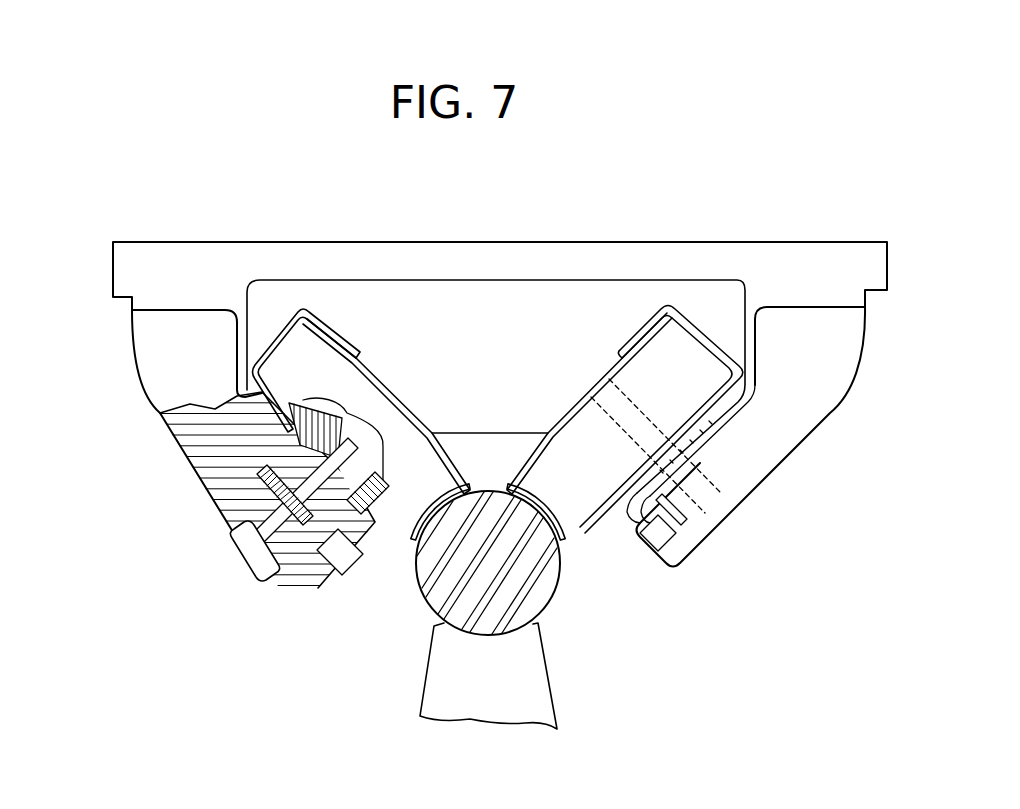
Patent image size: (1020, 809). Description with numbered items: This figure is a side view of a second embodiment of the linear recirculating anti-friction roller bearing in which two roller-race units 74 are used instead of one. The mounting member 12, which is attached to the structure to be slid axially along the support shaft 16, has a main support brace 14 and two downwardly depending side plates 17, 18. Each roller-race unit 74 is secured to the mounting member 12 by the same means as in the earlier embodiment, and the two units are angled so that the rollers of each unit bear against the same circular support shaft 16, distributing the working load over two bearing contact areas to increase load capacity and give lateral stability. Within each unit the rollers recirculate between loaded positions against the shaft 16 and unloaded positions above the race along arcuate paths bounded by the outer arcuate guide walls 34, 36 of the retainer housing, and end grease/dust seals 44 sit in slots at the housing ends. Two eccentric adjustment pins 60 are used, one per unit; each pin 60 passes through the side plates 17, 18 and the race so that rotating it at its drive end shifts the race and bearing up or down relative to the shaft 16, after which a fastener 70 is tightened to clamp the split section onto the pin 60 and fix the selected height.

The mounting member 12 is at (348, 250).
The main support brace 14 is at (523, 271).
The support shaft 16 is at (538, 602).
The side plate 17 is at (852, 335).
The side plate 18 is at (143, 343).
The outer arcuate guide wall 34 is at (388, 412).
The outer arcuate guide wall 36 is at (180, 440).
The end grease/dust seal 44 is at (406, 540).
The adjustment pin 60 is at (234, 552).
The fastener 70 is at (340, 566).
The roller-race unit 74 is at (292, 310).